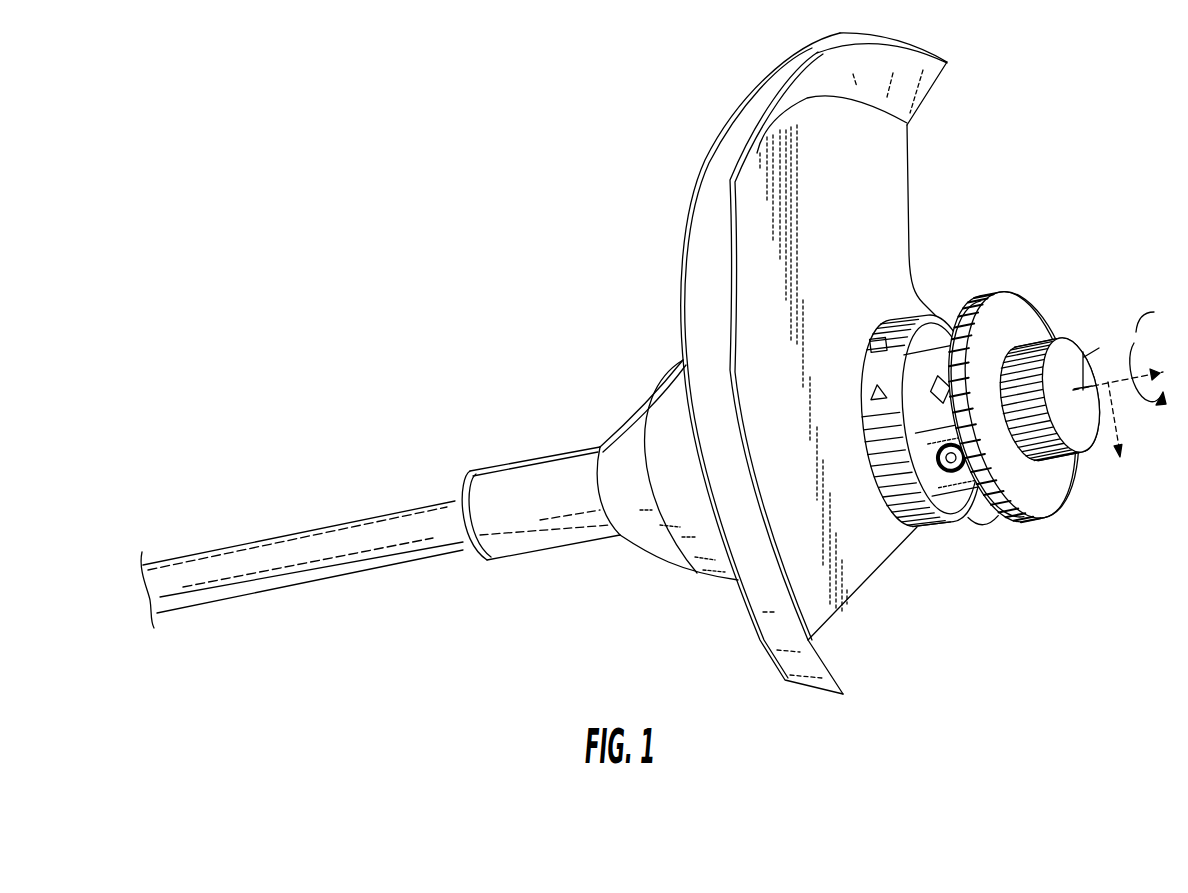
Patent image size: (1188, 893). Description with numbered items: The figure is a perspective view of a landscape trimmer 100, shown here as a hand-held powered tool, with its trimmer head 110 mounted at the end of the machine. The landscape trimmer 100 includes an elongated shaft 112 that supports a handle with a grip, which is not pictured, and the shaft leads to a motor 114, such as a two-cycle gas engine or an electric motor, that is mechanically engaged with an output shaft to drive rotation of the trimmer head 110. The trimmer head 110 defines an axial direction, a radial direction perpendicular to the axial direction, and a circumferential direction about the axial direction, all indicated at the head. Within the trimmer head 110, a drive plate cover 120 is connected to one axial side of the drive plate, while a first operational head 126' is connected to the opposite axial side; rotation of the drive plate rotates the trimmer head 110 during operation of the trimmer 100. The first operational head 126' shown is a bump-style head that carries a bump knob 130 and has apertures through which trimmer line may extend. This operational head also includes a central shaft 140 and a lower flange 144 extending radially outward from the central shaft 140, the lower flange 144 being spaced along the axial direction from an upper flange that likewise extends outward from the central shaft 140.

The landscape trimmer 100 is at (454, 242).
The trimmer head 110 is at (1015, 413).
The elongated shaft 112 is at (283, 547).
The motor 114 is at (632, 428).
The drive plate cover 120 is at (925, 523).
The first operational head 126' is at (1018, 547).
The bump knob 130 is at (1069, 336).
The central shaft 140 is at (928, 357).
The lower flange 144 is at (1058, 503).